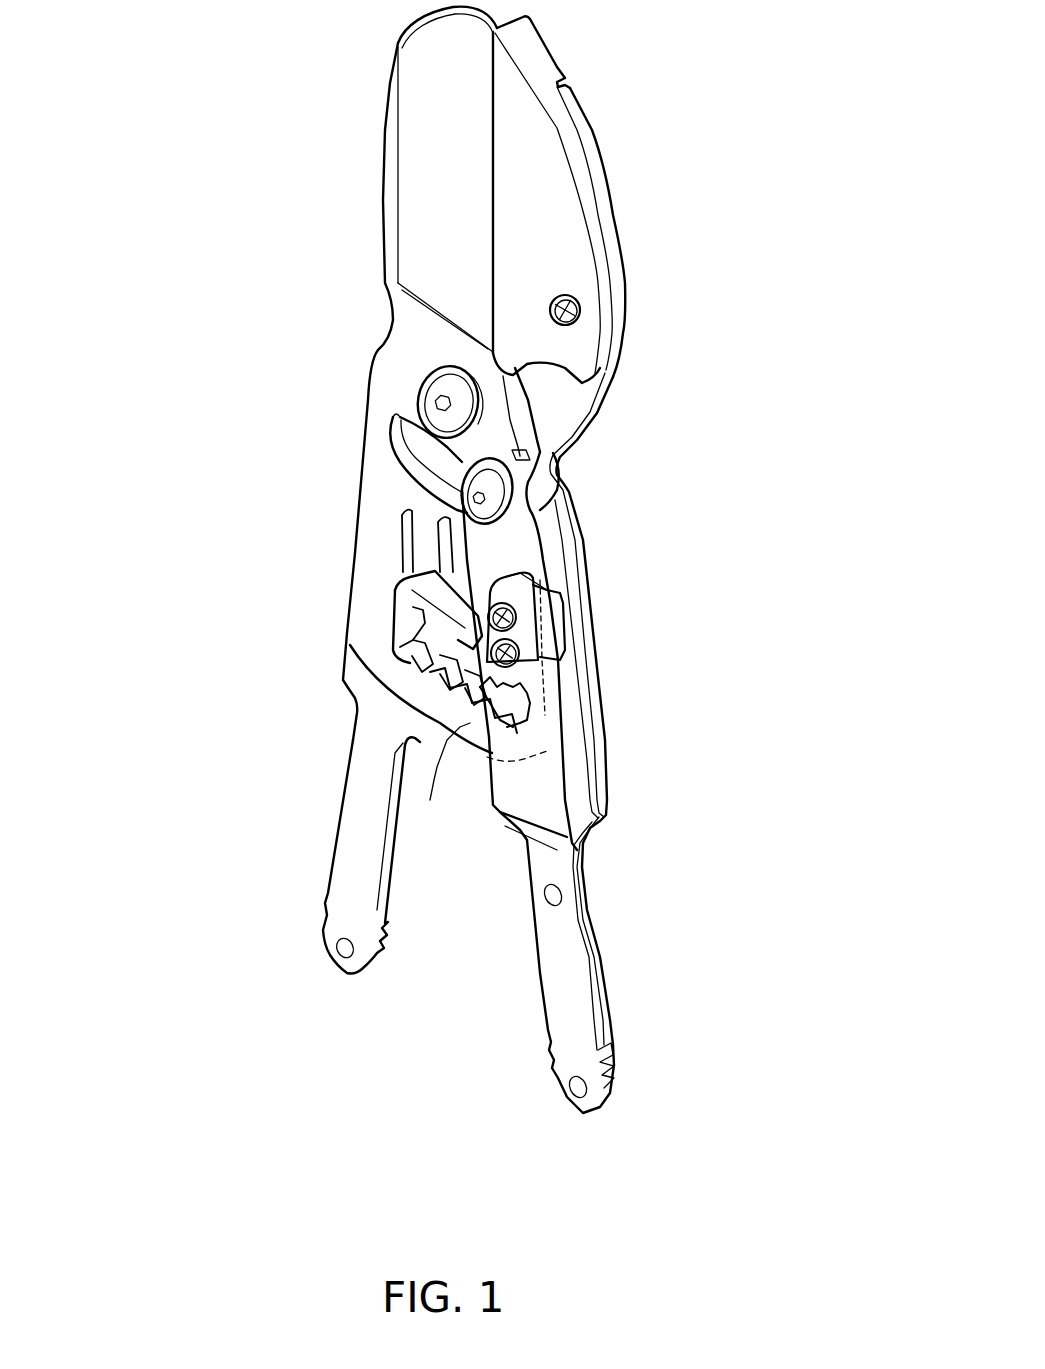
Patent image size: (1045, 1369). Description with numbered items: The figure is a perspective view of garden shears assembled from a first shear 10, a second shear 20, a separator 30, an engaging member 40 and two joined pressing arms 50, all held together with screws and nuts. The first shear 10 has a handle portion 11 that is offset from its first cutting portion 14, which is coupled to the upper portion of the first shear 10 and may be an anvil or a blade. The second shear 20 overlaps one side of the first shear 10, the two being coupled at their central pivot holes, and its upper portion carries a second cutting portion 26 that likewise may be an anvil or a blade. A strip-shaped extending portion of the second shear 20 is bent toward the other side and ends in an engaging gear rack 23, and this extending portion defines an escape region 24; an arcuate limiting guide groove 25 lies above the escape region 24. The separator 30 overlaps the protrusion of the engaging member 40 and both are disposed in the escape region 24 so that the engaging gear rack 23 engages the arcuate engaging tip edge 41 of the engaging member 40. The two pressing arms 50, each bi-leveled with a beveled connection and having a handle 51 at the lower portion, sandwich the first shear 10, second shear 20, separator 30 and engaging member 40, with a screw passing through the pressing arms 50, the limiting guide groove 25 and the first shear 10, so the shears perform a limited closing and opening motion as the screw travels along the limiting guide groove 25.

The first shear 10 is at (685, 564).
The handle portion 11 is at (365, 832).
The first cutting portion 14 is at (540, 163).
The second shear 20 is at (297, 497).
The engaging gear rack 23 is at (463, 742).
The escape region 24 is at (457, 563).
The limiting guide groove 25 is at (403, 433).
The second cutting portion 26 is at (448, 130).
The separator 30 is at (567, 607).
The engaging member 40 is at (474, 695).
The engaging tip edge 41 is at (450, 632).
The pressing arms 50 is at (585, 512).
The handle 51 is at (560, 957).